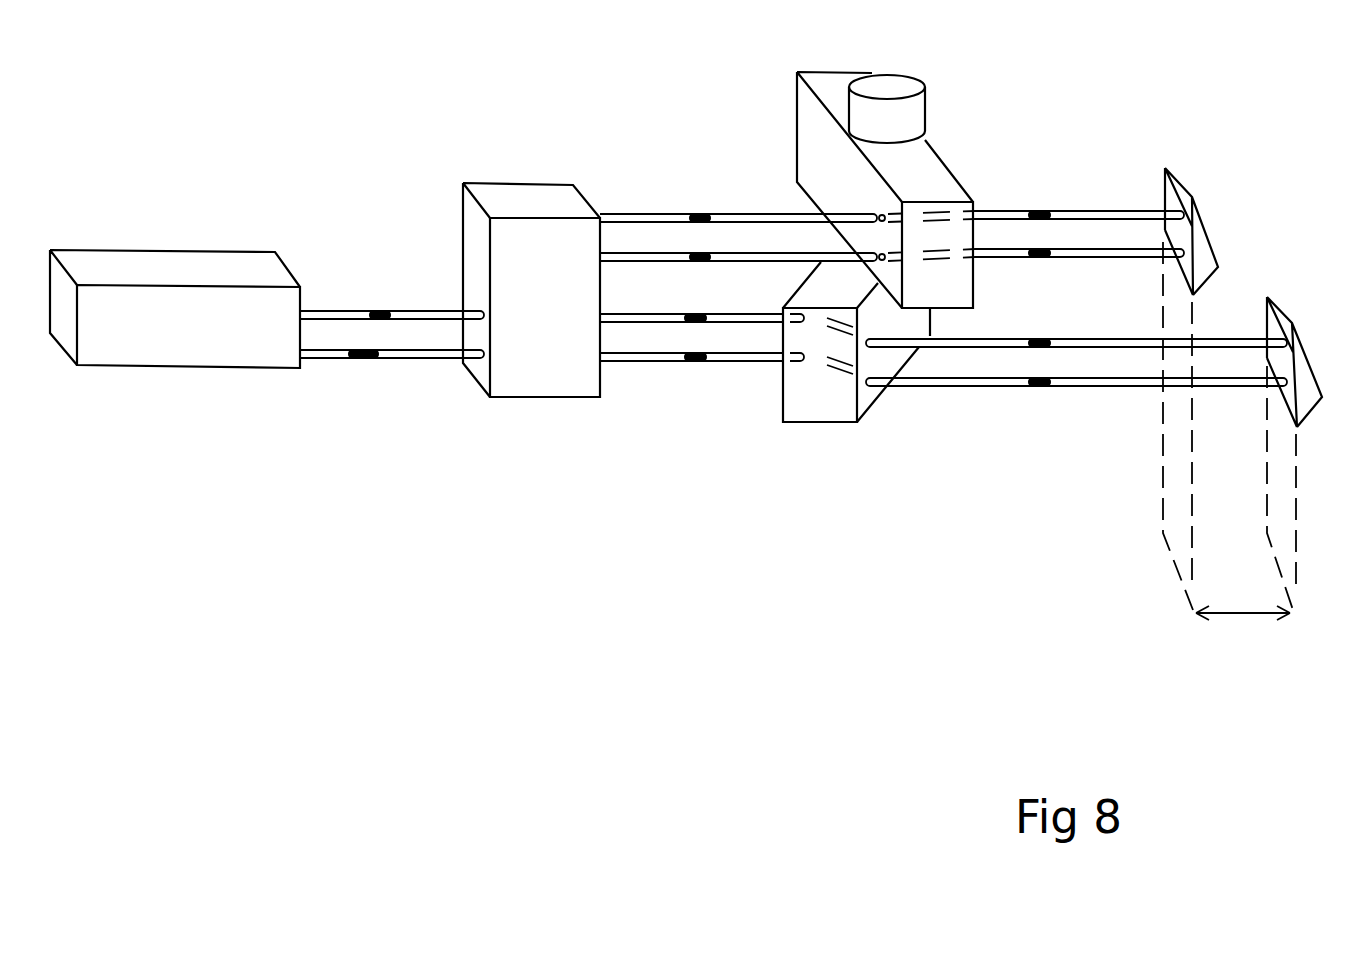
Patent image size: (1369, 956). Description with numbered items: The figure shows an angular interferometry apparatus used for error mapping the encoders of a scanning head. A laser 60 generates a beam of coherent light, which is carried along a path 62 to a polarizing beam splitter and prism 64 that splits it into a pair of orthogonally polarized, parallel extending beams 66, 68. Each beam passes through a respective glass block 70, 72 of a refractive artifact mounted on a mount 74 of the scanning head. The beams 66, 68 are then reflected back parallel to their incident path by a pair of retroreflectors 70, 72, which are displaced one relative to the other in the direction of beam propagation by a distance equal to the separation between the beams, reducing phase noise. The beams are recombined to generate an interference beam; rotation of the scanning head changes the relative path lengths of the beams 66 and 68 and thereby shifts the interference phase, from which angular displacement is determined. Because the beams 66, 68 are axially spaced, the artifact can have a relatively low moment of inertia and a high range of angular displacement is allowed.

The laser 60 is at (140, 258).
The optical fibers 62 is at (372, 302).
The polarizing beam splitter and prism 64 is at (488, 192).
The beam 66 is at (645, 212).
The beam 68 is at (648, 313).
The glass block / retroreflector 70 is at (810, 145).
The glass block / retroreflector 72 is at (818, 412).
The mount 74 is at (927, 110).